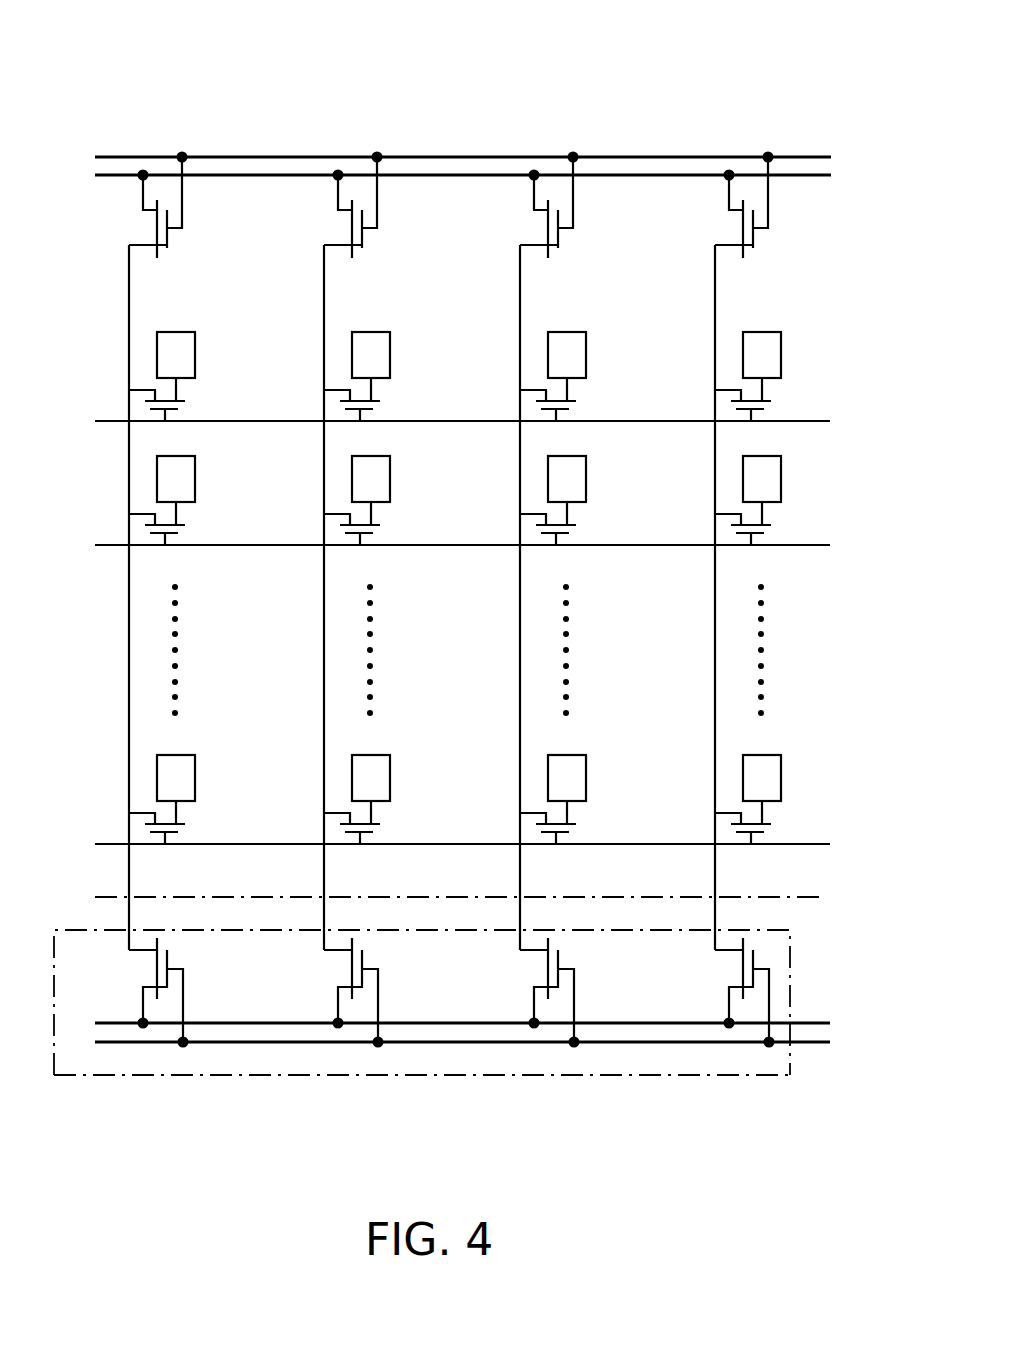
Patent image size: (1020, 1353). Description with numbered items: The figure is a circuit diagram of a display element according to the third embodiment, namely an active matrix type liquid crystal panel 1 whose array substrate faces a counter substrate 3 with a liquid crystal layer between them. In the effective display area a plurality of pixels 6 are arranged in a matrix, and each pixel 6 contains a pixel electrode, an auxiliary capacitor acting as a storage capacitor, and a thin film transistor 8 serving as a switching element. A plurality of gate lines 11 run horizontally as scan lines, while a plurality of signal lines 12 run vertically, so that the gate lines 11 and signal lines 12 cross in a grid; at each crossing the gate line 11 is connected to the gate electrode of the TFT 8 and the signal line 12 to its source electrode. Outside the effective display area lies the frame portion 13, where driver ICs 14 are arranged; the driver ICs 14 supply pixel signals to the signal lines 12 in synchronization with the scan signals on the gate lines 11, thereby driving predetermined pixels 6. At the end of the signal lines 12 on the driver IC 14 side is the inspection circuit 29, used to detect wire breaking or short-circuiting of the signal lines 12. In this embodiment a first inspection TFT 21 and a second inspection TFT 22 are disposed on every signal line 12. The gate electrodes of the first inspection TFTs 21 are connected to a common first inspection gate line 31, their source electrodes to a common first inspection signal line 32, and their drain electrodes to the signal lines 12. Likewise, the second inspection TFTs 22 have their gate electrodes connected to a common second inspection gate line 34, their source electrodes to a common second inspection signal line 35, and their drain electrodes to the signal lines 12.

The liquid crystal panel 1 is at (548, 64).
The counter substrate 3 is at (825, 898).
The pixel 6 is at (494, 571).
The thin film transistor 8 is at (480, 610).
The gate line 11 is at (103, 424).
The signal line 12 is at (386, 597).
The frame portion 13 is at (822, 957).
The driver IC 14 is at (335, 1075).
The first inspection TFT 21 is at (427, 205).
The second inspection TFT 22 is at (426, 993).
The inspection circuit 29 is at (742, 135).
The first inspection gate line 31 is at (235, 157).
The first inspection signal line 32 is at (434, 174).
The second inspection gate line 34 is at (234, 1042).
The second inspection signal line 35 is at (473, 1042).